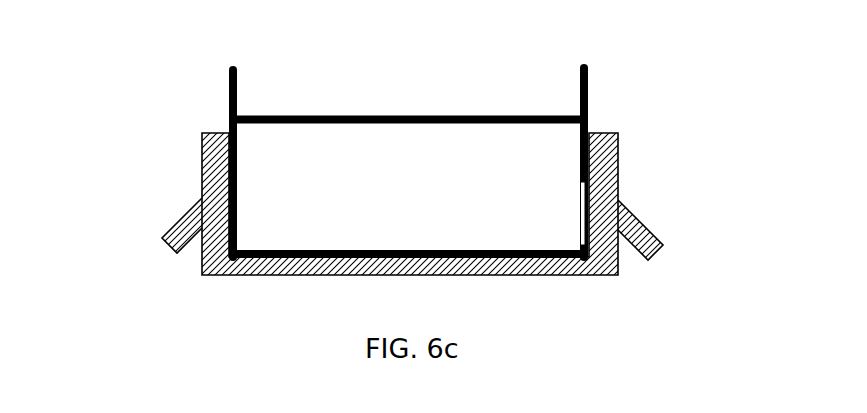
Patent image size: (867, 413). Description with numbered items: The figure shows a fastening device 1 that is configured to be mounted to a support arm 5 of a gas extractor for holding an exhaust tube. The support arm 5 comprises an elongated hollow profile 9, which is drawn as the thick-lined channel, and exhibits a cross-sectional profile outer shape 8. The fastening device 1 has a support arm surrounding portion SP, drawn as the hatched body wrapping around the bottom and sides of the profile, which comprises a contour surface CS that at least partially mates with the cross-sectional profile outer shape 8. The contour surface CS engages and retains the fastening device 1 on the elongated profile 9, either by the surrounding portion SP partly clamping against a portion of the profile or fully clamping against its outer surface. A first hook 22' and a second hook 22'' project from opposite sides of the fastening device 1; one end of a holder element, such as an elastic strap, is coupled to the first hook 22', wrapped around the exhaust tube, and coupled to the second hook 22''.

The fastening device 1 is at (415, 156).
The support arm 5 is at (370, 147).
The cross-sectional profile outer shape 8 is at (229, 84).
The elongated hollow profile 9 is at (373, 186).
The contour surface CS is at (579, 203).
The support arm surrounding portion SP is at (637, 124).
The first hook 22' is at (135, 235).
The second hook 22'' is at (689, 229).